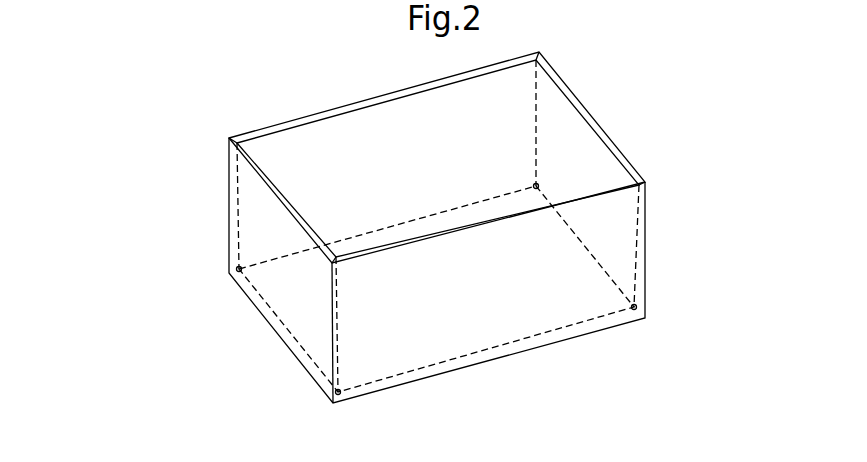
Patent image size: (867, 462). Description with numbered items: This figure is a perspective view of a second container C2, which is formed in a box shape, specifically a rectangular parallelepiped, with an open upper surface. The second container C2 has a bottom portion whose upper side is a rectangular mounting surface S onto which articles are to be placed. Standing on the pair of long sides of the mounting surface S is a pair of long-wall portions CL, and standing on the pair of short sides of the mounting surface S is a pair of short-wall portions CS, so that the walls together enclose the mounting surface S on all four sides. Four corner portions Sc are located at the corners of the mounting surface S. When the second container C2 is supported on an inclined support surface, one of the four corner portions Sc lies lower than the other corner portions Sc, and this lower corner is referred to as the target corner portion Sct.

The second container C2 is at (635, 138).
The long-wall portion CL is at (333, 146).
The short-wall portion CS is at (253, 202).
The mounting surface S is at (427, 228).
The corner portion Sc is at (236, 267).
The target corner portion Sct is at (338, 400).